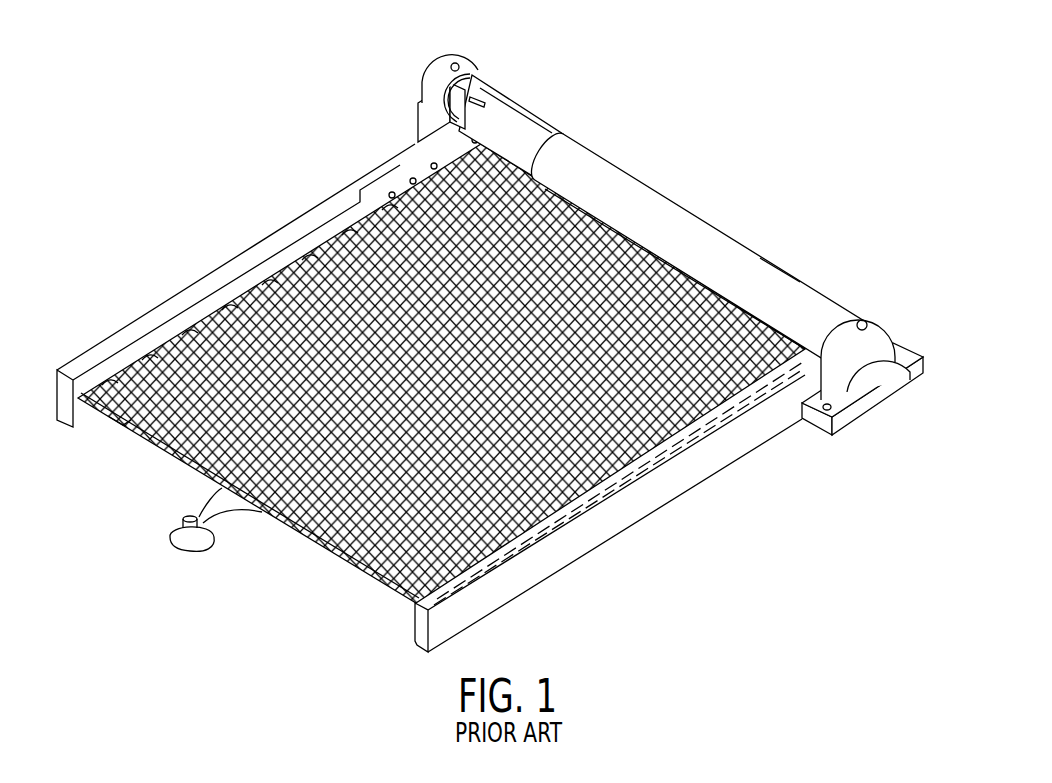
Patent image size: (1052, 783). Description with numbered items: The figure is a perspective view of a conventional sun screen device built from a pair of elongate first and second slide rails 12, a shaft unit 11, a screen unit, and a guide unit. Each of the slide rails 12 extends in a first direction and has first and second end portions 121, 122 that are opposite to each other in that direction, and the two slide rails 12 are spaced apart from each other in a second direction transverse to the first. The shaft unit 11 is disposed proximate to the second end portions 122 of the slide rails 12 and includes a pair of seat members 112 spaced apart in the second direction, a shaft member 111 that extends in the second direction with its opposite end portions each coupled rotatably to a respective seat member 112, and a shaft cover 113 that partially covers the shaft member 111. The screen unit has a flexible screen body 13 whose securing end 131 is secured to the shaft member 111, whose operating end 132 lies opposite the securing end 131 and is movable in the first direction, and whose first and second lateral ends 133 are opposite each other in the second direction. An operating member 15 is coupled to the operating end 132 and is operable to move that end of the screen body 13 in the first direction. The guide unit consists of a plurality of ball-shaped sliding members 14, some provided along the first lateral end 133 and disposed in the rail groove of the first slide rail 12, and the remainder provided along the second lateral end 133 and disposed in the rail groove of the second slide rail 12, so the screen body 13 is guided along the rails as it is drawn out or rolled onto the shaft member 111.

The shaft unit 11 is at (727, 213).
The shaft member 111 is at (505, 128).
The seat members 112 is at (468, 68).
The shaft cover 113 is at (777, 277).
The first and second slide rails 12 is at (310, 214).
The first end portion 121 is at (77, 370).
The second end portion 122 is at (419, 102).
The screen body 13 is at (323, 565).
The securing end 131 is at (583, 250).
The operating end 132 is at (262, 495).
The first and second lateral ends 133 is at (257, 307).
The sliding members 14 is at (390, 192).
The operating member 15 is at (123, 420).